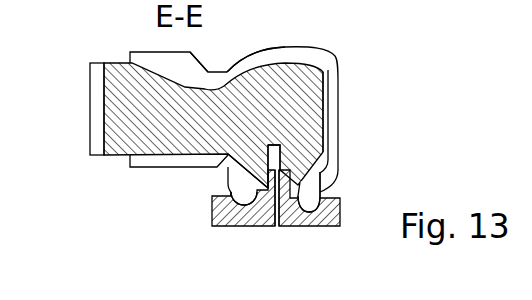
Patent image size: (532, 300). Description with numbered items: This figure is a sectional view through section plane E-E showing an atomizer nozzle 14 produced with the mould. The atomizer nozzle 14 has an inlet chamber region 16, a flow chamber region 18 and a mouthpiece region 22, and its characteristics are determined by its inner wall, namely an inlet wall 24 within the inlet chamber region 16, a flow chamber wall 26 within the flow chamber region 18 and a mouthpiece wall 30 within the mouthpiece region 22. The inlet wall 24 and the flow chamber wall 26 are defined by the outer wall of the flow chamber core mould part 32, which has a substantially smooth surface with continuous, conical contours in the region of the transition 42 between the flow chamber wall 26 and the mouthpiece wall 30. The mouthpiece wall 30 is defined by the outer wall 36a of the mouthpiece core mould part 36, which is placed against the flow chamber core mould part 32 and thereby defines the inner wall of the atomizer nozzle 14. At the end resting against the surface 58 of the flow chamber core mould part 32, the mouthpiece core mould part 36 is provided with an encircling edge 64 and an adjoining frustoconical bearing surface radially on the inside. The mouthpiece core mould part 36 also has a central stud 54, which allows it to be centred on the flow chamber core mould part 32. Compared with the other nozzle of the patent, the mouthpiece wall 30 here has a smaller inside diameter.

The inlet chamber region 16 is at (132, 51).
The atomizer nozzle 14 is at (210, 62).
The inlet wall 24 is at (244, 60).
The flow chamber core mould part 32 is at (280, 68).
The flow chamber region 18 is at (326, 72).
The flow chamber wall 26 is at (222, 88).
The central stud 54 is at (298, 182).
The transition 42 is at (310, 182).
The mouthpiece region 22 is at (318, 190).
The surface 58 is at (232, 165).
The encircling edge 64 is at (222, 200).
The outer wall 36a is at (242, 207).
The mouthpiece wall 30 is at (294, 206).
The mouthpiece core mould part 36 is at (333, 214).